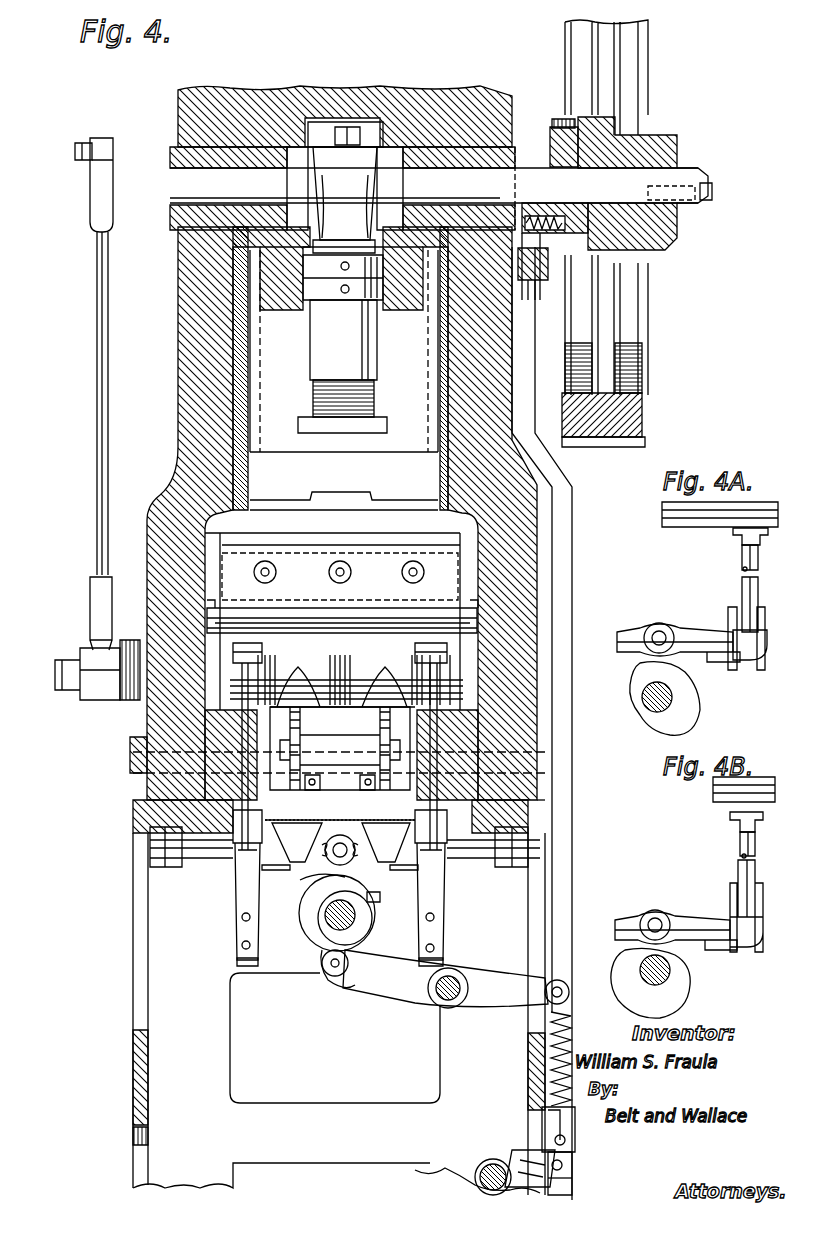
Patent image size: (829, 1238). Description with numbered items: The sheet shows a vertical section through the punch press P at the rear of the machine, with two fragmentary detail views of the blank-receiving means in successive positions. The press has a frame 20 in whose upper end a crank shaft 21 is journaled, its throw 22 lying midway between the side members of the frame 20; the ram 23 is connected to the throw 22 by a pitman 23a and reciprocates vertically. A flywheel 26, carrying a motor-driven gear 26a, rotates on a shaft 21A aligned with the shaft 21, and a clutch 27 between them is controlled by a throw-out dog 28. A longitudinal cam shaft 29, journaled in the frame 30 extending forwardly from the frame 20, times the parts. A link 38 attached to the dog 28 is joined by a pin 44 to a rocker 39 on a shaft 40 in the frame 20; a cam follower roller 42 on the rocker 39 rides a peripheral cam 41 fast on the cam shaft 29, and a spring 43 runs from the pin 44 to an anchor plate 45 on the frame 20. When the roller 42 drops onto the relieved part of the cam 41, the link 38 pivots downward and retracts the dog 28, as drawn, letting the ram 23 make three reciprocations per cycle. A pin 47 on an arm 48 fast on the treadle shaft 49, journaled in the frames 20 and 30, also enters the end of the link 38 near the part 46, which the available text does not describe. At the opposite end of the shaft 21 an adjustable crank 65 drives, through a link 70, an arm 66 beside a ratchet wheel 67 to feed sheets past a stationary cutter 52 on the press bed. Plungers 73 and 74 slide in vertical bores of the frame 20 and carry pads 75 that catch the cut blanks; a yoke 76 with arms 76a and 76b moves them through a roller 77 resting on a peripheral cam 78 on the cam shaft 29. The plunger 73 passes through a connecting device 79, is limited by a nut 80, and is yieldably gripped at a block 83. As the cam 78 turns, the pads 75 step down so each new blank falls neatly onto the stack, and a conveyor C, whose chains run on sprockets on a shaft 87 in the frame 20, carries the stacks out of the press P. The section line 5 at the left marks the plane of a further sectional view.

In FIG. 4, the section line 5- 5 is at (48, 150).
In FIG. 4, the punch press P is at (186, 77).
In FIG. 4, the frame 20 is at (178, 355).
In FIG. 4, the crank shaft 21 is at (434, 188).
In FIG. 4, the shaft 21A is at (645, 183).
In FIG. 4, the throw 22 is at (357, 148).
In FIG. 4, the ram 23 is at (378, 481).
In FIG. 4, the pitman 23a is at (345, 338).
In FIG. 4, the flywheel 26 is at (636, 316).
In FIG. 4, the gear 26a is at (583, 448).
In FIG. 4, the clutch 27 is at (548, 130).
In FIG. 4, the throw-out dog 28 is at (535, 283).
In FIG. 4, the cam shaft 29 is at (352, 926).
In FIG. 4A, the cam shaft 29 is at (667, 701).
In FIG. 4B, the cam shaft 29 is at (650, 978).
In FIG. 4, the frame 30 is at (133, 1058).
In FIG. 4, the link 38 is at (572, 598).
In FIG. 4, the rocker 39 is at (512, 975).
In FIG. 4, the shaft 40 is at (450, 1002).
In FIG. 4, the peripheral cam 41 is at (312, 930).
In FIG. 4, the cam follower roller 42 is at (322, 963).
In FIG. 4, the spring 43 is at (572, 1026).
In FIG. 4, the pin 44 is at (570, 992).
In FIG. 4, the anchor plate 45 is at (540, 1147).
In FIG. 4, the pin 46 is at (562, 1175).
In FIG. 4, the pin 47 is at (562, 1170).
In FIG. 4, the arm 48 is at (520, 1160).
In FIG. 4, the shaft 49 is at (475, 1170).
In FIG. 4, the stationary cutter 52 is at (383, 625).
In FIG. 4A, the stationary cutter 52 is at (688, 528).
In FIG. 4B, the stationary cutter 52 is at (713, 800).
In FIG. 4, the adjustable crank 65 is at (92, 163).
In FIG. 4, the arm 66 is at (92, 632).
In FIG. 4, the ratchet wheel 67 is at (122, 700).
In FIG. 4, the link 70 is at (97, 321).
In FIG. 4, the plunger 73 is at (440, 830).
In FIG. 4A, the plunger 73 is at (743, 568).
In FIG. 4B, the plunger 73 is at (741, 855).
In FIG. 4, the plunger 74 is at (243, 829).
In FIG. 4, the pad 75 is at (244, 645).
In FIG. 4A, the pad 75 is at (735, 538).
In FIG. 4B, the pad 75 is at (735, 826).
In FIG. 4, the yoke 76 is at (368, 866).
In FIG. 4A, the yoke 76 is at (710, 647).
In FIG. 4B, the yoke 76 is at (696, 920).
In FIG. 4, the arm 76a is at (405, 872).
In FIG. 4A, the arm 76a is at (732, 620).
In FIG. 4B, the arm 76a is at (730, 918).
In FIG. 4, the arm 76b is at (270, 870).
In FIG. 4, the roller 77 is at (350, 826).
In FIG. 4A, the roller 77 is at (668, 624).
In FIG. 4B, the roller 77 is at (665, 912).
In FIG. 4, the peripheral cam 78 is at (300, 908).
In FIG. 4A, the peripheral cam 78 is at (705, 698).
In FIG. 4B, the peripheral cam 78 is at (693, 982).
In FIG. 4, the connecting device 79 is at (452, 899).
In FIG. 4, the nut 80 is at (442, 912).
In FIG. 4, the block 83 is at (236, 855).
In FIG. 4, the shaft 87 is at (545, 797).
In FIG. 4, the conveyor C is at (362, 712).